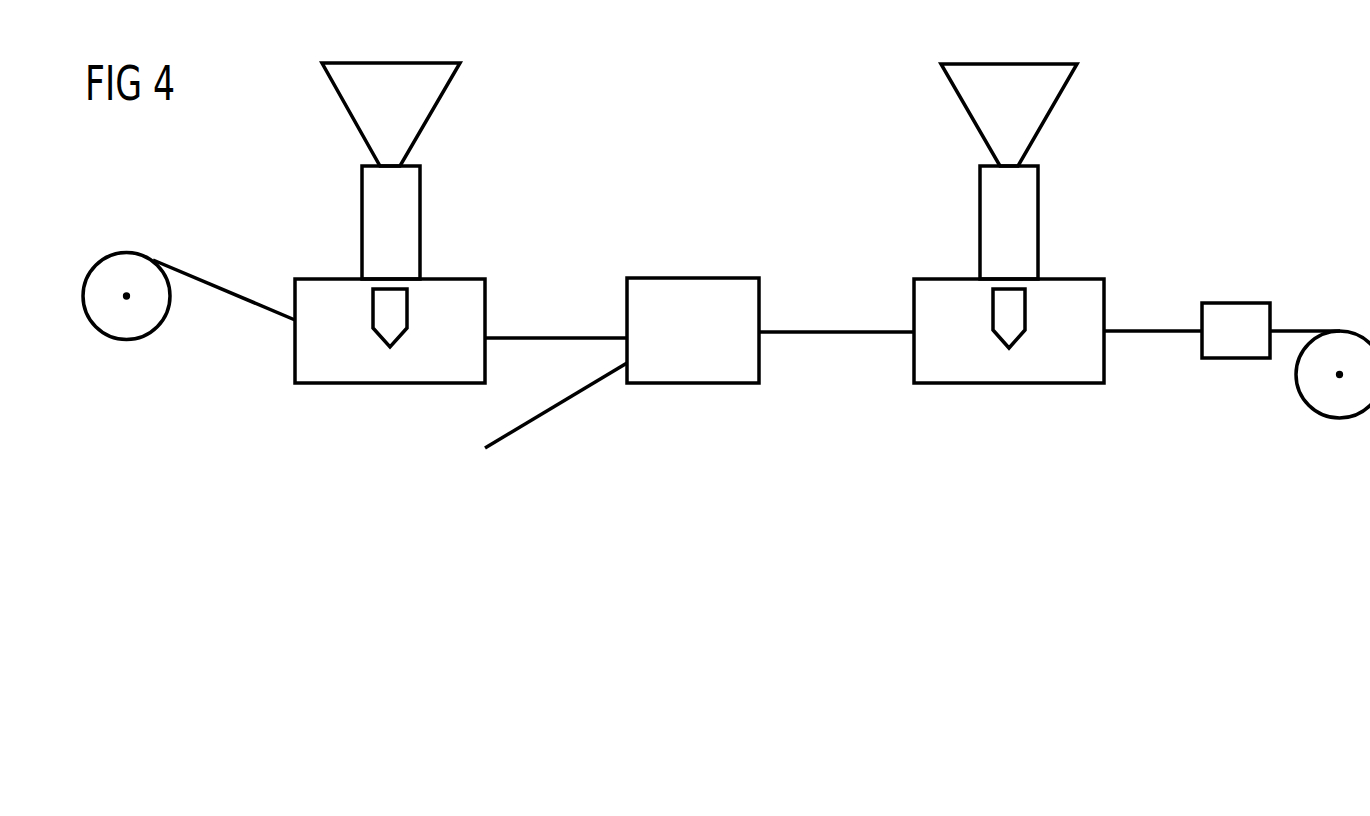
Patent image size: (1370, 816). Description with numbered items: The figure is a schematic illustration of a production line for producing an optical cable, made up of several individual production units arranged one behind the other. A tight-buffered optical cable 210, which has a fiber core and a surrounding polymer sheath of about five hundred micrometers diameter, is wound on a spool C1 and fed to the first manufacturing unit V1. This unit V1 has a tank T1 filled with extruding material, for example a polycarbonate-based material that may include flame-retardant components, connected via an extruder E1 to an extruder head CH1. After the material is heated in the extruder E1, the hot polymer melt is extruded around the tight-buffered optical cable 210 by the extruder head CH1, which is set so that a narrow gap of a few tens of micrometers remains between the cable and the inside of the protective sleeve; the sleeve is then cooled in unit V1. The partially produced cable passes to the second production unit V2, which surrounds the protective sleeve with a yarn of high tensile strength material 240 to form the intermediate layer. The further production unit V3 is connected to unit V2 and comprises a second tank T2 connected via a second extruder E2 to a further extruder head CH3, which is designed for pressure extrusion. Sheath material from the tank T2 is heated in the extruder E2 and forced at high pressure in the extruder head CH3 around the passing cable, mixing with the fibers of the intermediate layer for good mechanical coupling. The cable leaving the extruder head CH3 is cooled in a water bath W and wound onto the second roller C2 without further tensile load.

The spool C1 is at (125, 340).
The tight-buffered optical cable 210 is at (206, 279).
The first manufacturing unit V1 is at (350, 383).
The extruder E1 is at (420, 215).
The tank T1 is at (425, 105).
The extruder head CH1 is at (397, 337).
The second production unit V2 is at (693, 278).
The high tensile strength material 240 is at (513, 433).
The further production unit V3 is at (965, 383).
The second extruder E2 is at (1030, 227).
The second tank T2 is at (1040, 105).
The further extruder head CH3 is at (1018, 335).
The water bath W is at (1238, 302).
The second roller C2 is at (1340, 418).